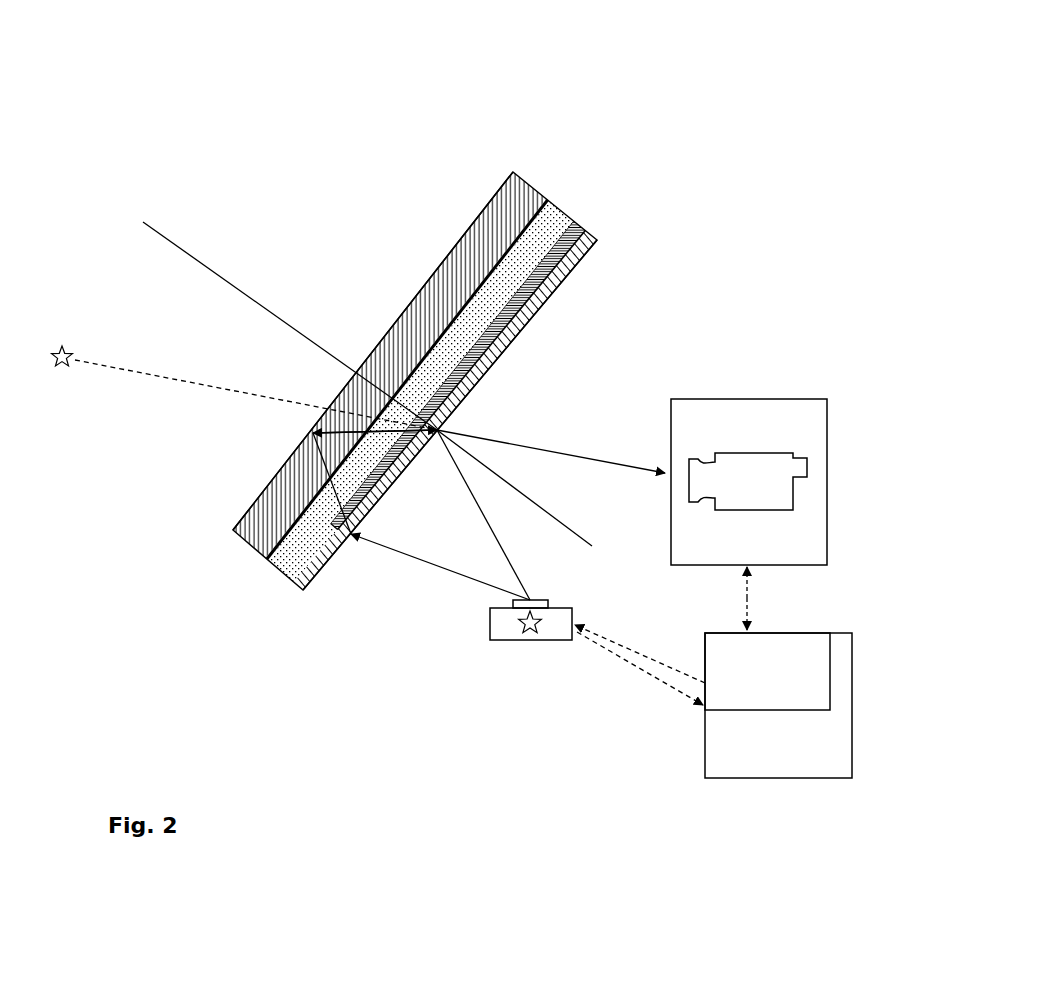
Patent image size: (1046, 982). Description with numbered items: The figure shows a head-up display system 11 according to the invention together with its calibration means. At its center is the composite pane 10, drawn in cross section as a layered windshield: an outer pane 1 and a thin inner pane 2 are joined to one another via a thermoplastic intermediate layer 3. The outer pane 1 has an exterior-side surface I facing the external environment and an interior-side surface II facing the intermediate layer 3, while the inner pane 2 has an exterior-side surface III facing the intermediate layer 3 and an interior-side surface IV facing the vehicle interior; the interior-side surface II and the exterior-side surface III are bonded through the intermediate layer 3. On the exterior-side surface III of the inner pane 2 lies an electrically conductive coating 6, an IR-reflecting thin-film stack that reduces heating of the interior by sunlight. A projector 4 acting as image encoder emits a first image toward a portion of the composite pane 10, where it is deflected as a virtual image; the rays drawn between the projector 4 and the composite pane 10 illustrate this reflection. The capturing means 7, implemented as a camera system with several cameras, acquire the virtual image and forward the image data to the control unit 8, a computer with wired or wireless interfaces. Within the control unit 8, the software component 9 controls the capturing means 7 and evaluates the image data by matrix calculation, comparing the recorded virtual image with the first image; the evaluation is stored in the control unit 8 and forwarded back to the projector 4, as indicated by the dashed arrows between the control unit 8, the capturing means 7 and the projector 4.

The outer pane 1 is at (423, 287).
The inner pane 2 is at (550, 282).
The thermoplastic intermediate layer 3 is at (547, 223).
The projector 4 is at (490, 640).
The electrically conductive coating 6 is at (596, 247).
The capturing means 7 is at (750, 405).
The control unit 8 is at (800, 763).
The software component 9 is at (725, 712).
The composite pane 10 is at (493, 190).
The head-up display system 11 is at (613, 160).
The exterior-side surface of the outer pane I is at (373, 351).
The interior-side surface of the outer pane II is at (410, 363).
The exterior-side surface of the inner pane III is at (527, 303).
The interior-side surface of the inner pane IV is at (507, 353).